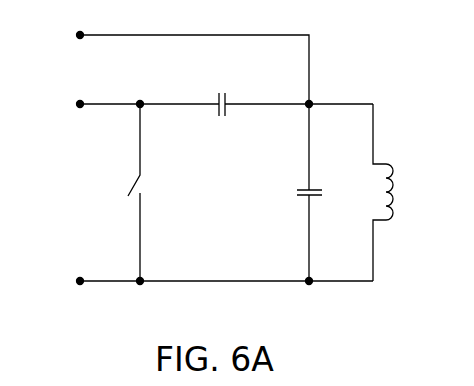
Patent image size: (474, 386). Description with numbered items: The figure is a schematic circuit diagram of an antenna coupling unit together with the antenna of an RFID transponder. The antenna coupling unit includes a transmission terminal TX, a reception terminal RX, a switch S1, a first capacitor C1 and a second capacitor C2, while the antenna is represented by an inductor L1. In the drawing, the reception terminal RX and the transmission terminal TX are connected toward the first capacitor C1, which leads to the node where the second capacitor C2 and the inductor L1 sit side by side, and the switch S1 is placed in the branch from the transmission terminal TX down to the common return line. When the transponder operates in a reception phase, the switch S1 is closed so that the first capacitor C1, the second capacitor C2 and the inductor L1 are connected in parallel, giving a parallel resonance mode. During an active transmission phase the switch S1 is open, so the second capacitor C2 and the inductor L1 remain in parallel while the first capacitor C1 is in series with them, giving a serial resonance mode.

The reception terminal RX is at (168, 62).
The transmission terminal TX is at (122, 104).
The first capacitor C1 is at (289, 87).
The second capacitor C2 is at (287, 192).
The switch S1 is at (114, 192).
The inductor L1 is at (407, 192).